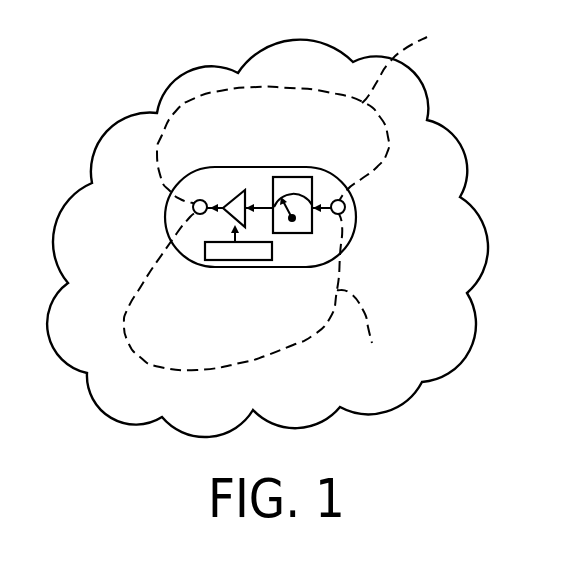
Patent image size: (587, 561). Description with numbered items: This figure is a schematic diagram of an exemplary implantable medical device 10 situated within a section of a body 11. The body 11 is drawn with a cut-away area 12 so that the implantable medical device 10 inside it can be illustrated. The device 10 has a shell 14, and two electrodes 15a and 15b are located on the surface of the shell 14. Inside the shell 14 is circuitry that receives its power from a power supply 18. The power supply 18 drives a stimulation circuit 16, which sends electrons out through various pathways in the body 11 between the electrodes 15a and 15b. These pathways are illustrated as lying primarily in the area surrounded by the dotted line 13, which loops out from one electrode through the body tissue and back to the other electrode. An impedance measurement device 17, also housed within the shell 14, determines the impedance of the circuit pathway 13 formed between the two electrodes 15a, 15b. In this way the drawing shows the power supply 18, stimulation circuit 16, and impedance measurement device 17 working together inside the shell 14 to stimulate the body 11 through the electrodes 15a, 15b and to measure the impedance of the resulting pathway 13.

The implantable medical device 10 is at (288, 211).
The body 11 is at (513, 157).
The cut-away area 12 is at (462, 273).
The dotted line 13 is at (427, 37).
The shell 14 is at (270, 267).
The electrode 15a is at (345, 208).
The electrode 15b is at (193, 202).
The stimulation circuit 16 is at (243, 190).
The impedance measurement device 17 is at (302, 177).
The power supply 18 is at (227, 251).